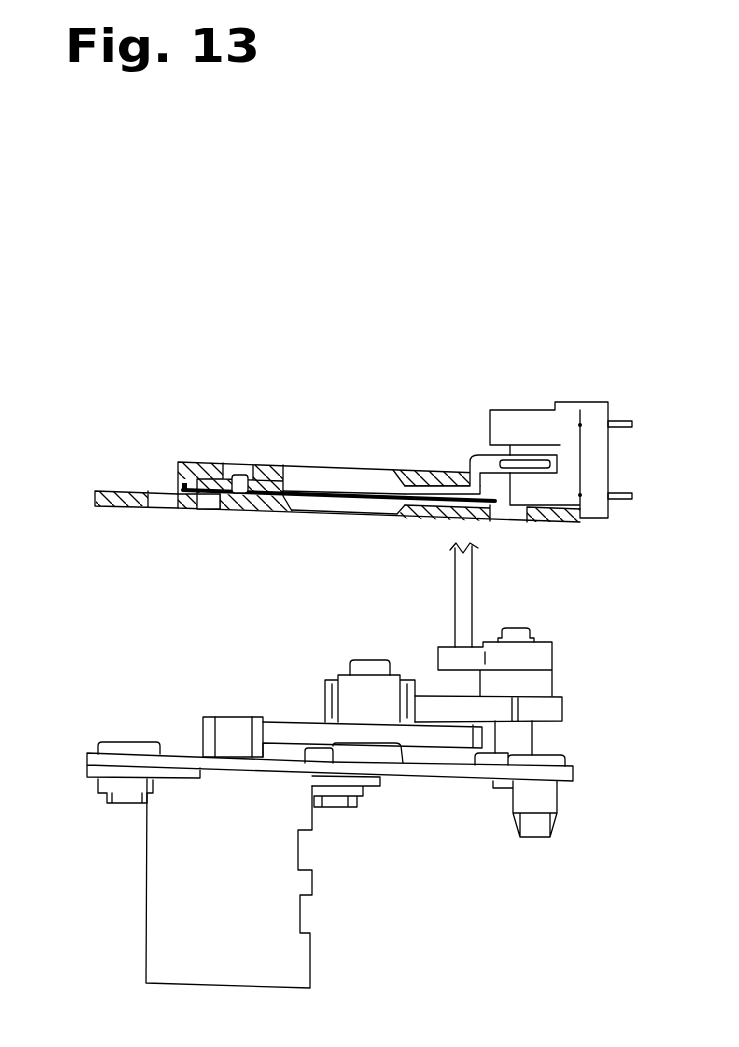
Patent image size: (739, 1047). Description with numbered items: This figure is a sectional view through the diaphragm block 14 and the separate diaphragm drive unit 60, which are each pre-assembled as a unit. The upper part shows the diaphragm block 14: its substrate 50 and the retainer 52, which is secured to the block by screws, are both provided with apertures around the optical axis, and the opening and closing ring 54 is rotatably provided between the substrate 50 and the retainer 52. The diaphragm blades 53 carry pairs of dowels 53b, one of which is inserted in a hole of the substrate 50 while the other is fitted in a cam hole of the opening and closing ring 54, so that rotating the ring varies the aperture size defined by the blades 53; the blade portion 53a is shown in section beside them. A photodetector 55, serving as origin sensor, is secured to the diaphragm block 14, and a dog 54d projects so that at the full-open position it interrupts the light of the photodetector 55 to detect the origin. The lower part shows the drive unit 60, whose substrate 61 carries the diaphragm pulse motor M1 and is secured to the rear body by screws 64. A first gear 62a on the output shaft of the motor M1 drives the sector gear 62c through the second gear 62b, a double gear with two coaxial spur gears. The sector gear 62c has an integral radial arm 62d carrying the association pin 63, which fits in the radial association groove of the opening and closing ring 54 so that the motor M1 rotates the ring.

The diaphragm block 14 is at (382, 443).
The substrate 50 is at (115, 495).
The retainer 52 is at (435, 467).
The diaphragm blades 53 is at (328, 487).
The lead support projection 53a is at (240, 475).
The dowels 53b is at (210, 500).
The opening and closing ring 54 is at (420, 487).
The dog 54d is at (517, 460).
The photodetector 55 is at (538, 427).
The drive unit 60 is at (335, 765).
The substrate 61 is at (107, 762).
The first gear 62a is at (228, 735).
The second gear 62b is at (363, 702).
The sector gear 62c is at (475, 708).
The radial arm 62d is at (470, 658).
The association pin 63 is at (468, 582).
The screws 64 is at (545, 762).
The diaphragm pulse motor M1 is at (277, 912).